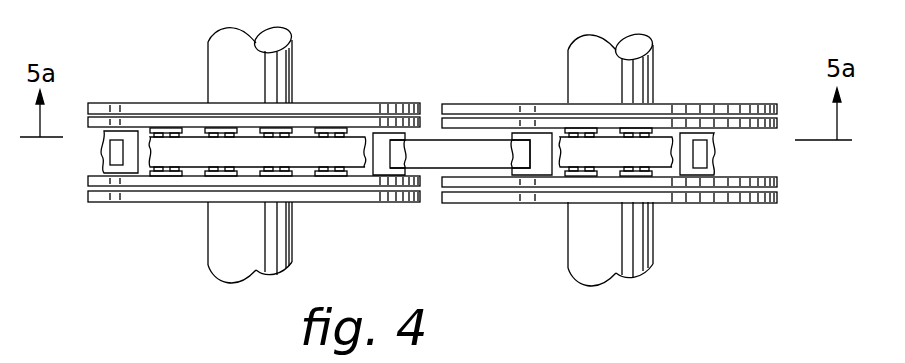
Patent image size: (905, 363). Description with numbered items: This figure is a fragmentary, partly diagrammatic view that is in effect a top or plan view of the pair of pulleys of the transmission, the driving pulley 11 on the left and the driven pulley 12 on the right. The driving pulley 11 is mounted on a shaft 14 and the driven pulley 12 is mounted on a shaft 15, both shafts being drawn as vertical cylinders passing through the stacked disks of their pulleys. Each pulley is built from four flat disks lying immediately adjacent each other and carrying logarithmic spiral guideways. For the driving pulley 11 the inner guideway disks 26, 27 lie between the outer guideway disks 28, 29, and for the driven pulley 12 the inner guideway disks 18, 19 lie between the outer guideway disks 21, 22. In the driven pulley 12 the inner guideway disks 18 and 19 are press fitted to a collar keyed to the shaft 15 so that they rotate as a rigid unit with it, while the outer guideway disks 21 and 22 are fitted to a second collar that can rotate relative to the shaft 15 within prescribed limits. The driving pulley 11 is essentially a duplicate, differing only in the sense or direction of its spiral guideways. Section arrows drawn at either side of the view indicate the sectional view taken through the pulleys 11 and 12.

The driving pulley 11 is at (186, 224).
The driven pulley 12 is at (682, 225).
The shaft 14 is at (292, 60).
The shaft 15 is at (655, 64).
The outer guideway disk 29 is at (355, 103).
The inner guideway disk 27 is at (421, 126).
The inner guideway disk 26 is at (421, 186).
The outer guideway disk 28 is at (406, 204).
The outer guideway disk 22 is at (715, 105).
The inner guideway disk 19 is at (778, 125).
The inner guideway disk 18 is at (777, 187).
The outer guideway disk 21 is at (767, 206).